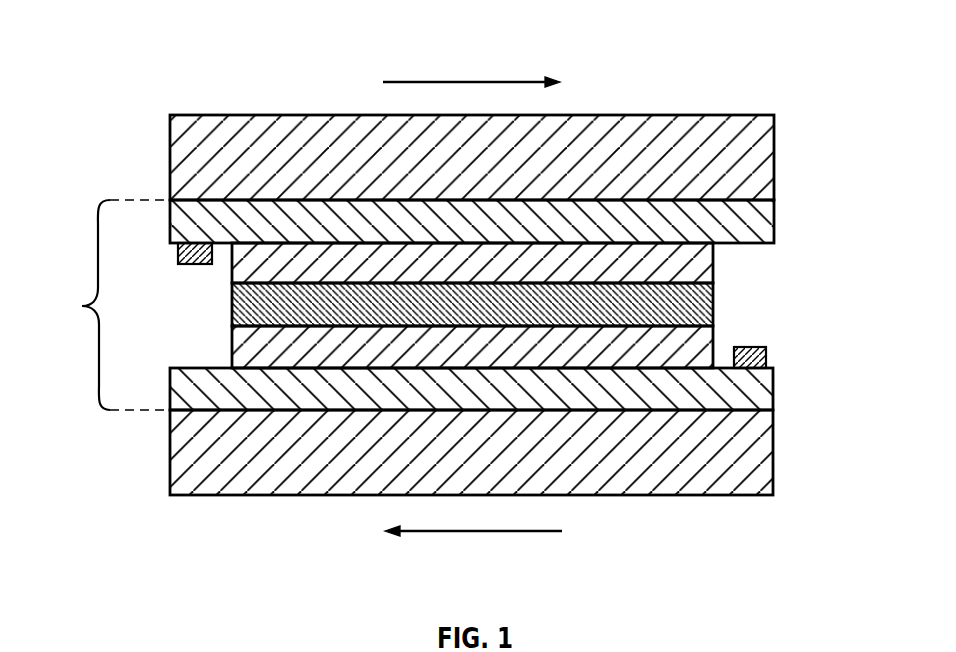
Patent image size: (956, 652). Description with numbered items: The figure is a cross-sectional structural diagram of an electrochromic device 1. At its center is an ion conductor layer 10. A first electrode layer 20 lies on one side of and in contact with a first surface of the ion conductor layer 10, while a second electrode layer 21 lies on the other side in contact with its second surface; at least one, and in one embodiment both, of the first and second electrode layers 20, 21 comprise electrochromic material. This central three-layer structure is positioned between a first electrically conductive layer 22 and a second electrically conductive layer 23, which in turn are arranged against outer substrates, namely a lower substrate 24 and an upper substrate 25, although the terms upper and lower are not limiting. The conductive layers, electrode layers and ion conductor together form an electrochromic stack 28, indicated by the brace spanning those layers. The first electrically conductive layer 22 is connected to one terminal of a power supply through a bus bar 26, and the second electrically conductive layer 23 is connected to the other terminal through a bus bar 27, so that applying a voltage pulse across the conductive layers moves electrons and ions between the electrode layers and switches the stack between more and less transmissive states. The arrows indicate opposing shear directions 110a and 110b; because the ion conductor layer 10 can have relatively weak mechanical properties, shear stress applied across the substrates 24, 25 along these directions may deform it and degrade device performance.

The electrochromic device 1 is at (450, 309).
The ion conductor layer 10 is at (715, 303).
The first electrode layer 20 is at (232, 347).
The second electrode layer 21 is at (715, 263).
The first electrically conductive layer 22 is at (773, 385).
The second electrically conductive layer 23 is at (774, 222).
The lower substrate 24 is at (774, 453).
The upper substrate 25 is at (774, 158).
The bus bar 26 is at (750, 347).
The bus bar 27 is at (194, 265).
The electrochromic stack 28 is at (110, 305).
The shear direction 110a is at (472, 80).
The shear direction 110b is at (472, 533).